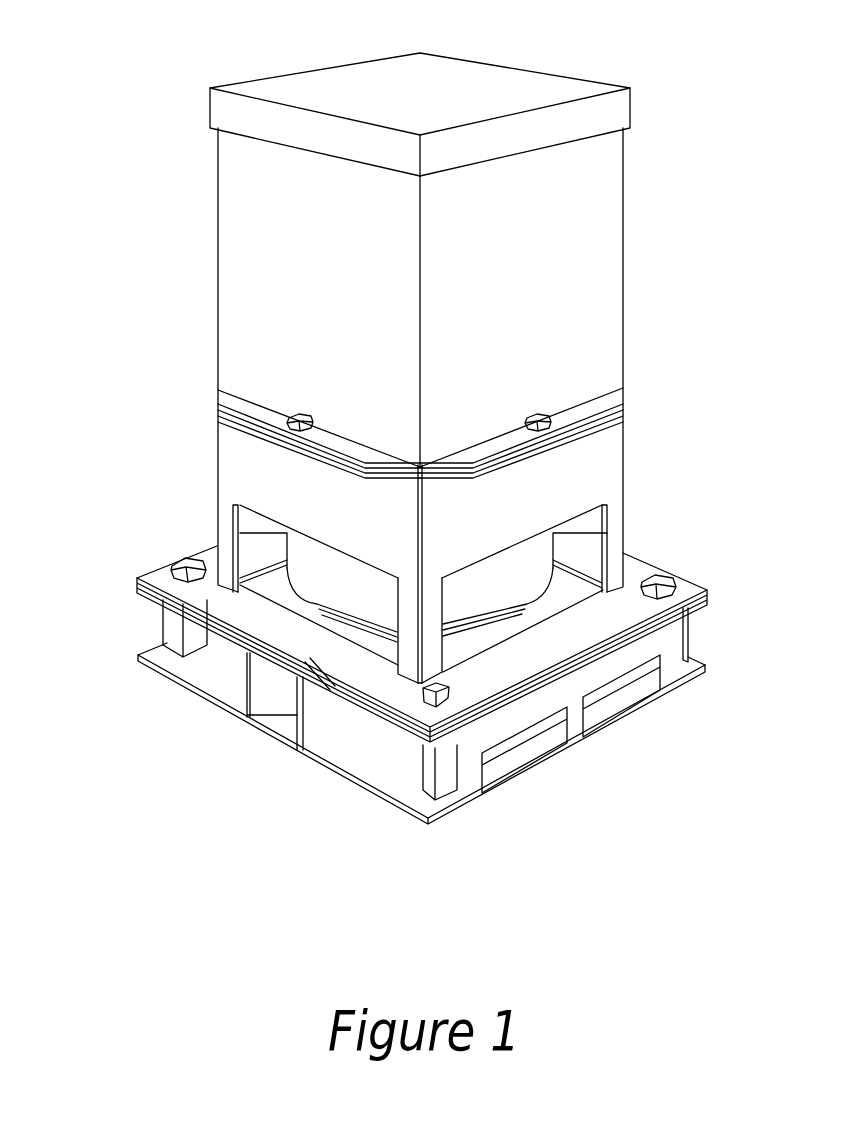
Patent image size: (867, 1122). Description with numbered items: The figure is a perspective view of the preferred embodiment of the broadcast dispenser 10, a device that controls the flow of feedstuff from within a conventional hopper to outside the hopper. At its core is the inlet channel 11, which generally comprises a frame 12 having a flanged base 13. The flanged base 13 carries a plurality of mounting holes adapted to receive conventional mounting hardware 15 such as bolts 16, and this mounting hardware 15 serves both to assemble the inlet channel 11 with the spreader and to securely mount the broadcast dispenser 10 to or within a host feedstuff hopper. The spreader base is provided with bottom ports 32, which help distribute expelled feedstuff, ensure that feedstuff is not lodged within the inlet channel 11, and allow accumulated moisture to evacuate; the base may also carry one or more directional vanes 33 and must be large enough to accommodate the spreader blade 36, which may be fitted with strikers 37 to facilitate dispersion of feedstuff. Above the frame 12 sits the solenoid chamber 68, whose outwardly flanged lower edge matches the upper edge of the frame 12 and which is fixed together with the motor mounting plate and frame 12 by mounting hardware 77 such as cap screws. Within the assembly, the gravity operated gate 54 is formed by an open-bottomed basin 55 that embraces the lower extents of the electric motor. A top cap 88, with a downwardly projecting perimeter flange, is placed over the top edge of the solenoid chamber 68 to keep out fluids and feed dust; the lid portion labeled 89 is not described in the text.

The broadcast dispenser 10 is at (138, 237).
The inlet channel 11 is at (642, 483).
The frame 12 is at (237, 470).
The flanged base 13 is at (515, 665).
The mounting hardware 15 is at (182, 566).
The bolts 16 is at (660, 580).
The bottom ports 32 is at (314, 714).
The directional vanes 33 is at (258, 692).
The spreader blade 36 is at (370, 720).
The strikers 37 is at (318, 690).
The gate 54 is at (312, 562).
The open-bottomed basin 55 is at (472, 585).
The solenoid chamber 68 is at (588, 254).
The mounting hardware 77 is at (292, 412).
The top cap 88 is at (437, 83).
The lid side wall 89 is at (606, 112).